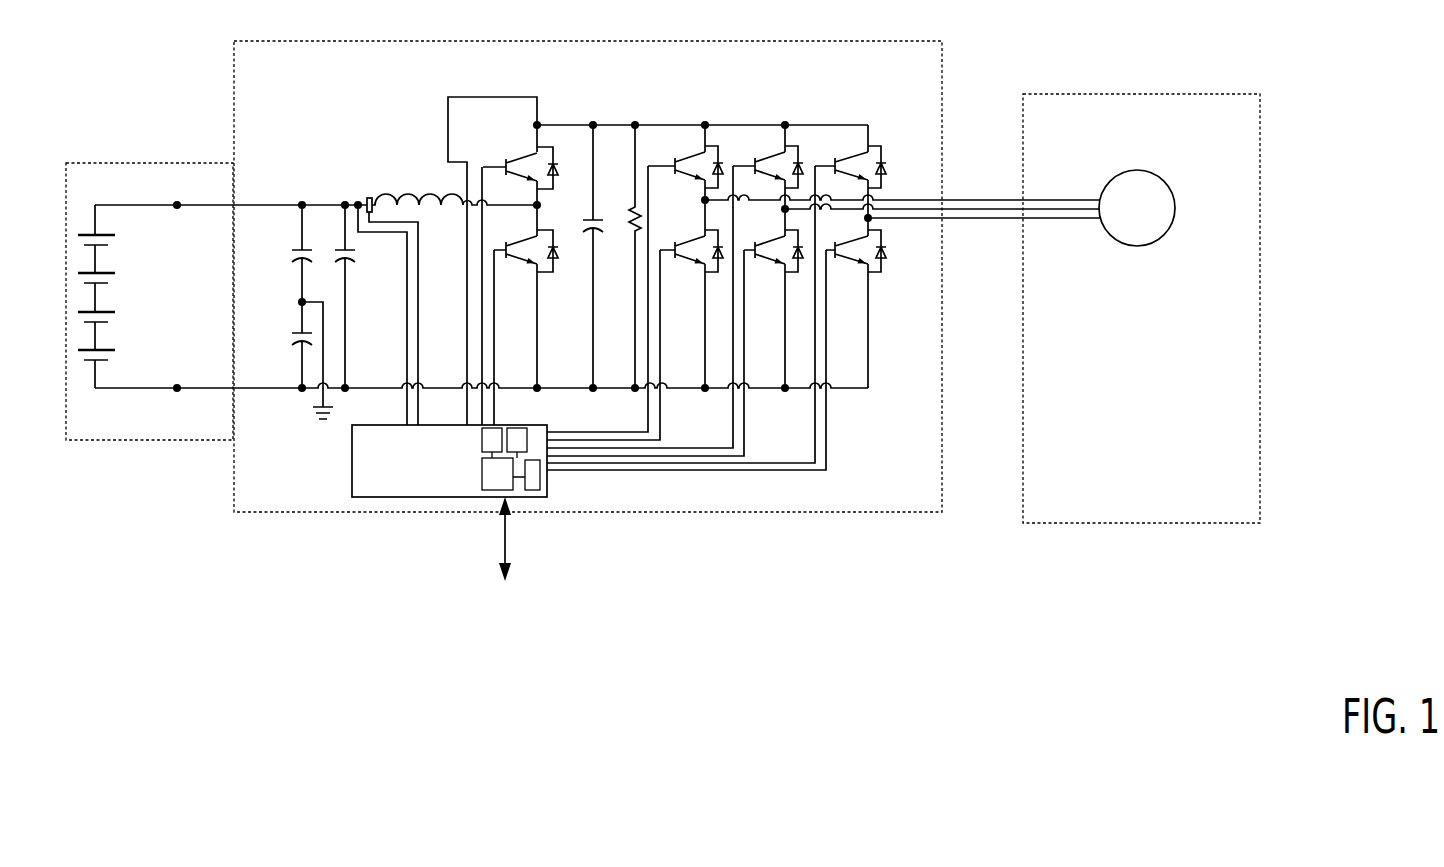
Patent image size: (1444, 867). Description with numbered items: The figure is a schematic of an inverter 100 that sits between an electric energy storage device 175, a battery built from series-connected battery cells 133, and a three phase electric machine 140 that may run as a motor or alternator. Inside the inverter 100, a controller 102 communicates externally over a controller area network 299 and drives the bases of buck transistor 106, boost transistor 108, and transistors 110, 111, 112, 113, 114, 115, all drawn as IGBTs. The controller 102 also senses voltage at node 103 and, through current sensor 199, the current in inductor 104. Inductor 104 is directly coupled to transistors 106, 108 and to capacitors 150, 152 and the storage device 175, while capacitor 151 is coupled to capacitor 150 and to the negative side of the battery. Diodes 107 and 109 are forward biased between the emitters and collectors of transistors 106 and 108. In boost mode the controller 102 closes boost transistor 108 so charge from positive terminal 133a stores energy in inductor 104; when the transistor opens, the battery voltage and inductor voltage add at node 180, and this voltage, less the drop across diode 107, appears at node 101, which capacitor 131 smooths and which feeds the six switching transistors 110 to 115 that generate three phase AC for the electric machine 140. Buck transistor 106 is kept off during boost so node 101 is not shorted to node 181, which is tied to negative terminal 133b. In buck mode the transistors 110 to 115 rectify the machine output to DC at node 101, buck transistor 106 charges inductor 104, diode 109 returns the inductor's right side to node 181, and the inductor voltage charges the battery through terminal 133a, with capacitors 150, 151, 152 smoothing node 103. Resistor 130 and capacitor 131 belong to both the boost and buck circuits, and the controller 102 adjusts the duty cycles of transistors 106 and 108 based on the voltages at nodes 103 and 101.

The inverter 100 is at (543, 46).
The node 101 is at (593, 122).
The controller 102 is at (449, 461).
The node 103 is at (342, 201).
The inductor 104 is at (450, 190).
The buck transistor 106 is at (512, 145).
The diode 107 is at (556, 163).
The boost transistor 108 is at (512, 265).
The diode 109 is at (556, 273).
The transistor 110 is at (690, 271).
The transistor 111 is at (703, 152).
The transistor 112 is at (770, 271).
The transistor 113 is at (783, 152).
The transistor 114 is at (852, 271).
The transistor 115 is at (866, 152).
The resistor 130 is at (630, 233).
The capacitor 131 is at (602, 216).
The battery cells 133 is at (124, 233).
The positive terminal 133a is at (100, 205).
The negative battery terminal 133b is at (100, 388).
The electric machine 140 is at (980, 308).
The capacitor 150 is at (299, 263).
The capacitor 151 is at (299, 344).
The capacitor 152 is at (347, 263).
The electric energy storage device 175 is at (134, 163).
The node 180 is at (543, 205).
The node 181 is at (539, 387).
The current sensor 199 is at (364, 198).
The controller area network 299 is at (507, 543).